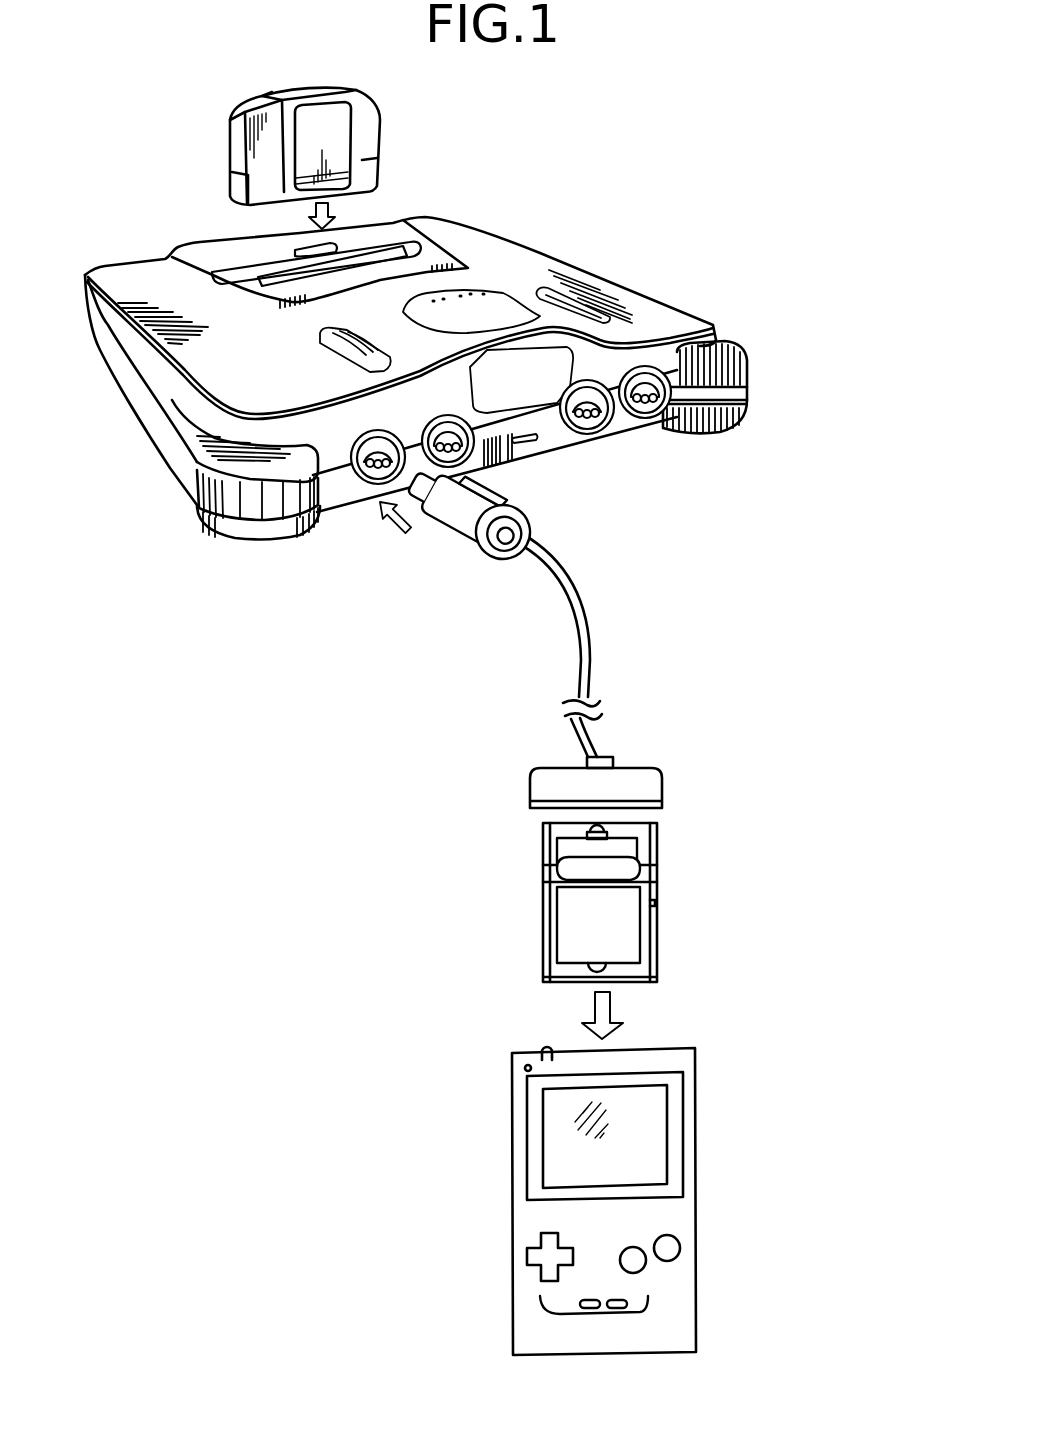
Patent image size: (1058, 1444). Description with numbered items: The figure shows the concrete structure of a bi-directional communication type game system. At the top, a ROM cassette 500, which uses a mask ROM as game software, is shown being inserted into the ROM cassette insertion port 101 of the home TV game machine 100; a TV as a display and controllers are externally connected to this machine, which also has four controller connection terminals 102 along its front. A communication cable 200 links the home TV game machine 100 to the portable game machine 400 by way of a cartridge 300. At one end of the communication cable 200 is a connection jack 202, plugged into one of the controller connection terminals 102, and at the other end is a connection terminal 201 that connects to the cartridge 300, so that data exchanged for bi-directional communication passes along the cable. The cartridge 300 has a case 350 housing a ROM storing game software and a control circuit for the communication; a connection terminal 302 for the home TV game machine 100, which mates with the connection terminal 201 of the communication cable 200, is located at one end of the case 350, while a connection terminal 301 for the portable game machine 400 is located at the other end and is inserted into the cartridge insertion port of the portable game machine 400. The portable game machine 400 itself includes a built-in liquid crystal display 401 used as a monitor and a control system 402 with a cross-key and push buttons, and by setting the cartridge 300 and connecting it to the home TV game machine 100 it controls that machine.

The home TV game machine 100 is at (465, 372).
The ROM cassette insertion port 101 is at (392, 247).
The controller connection terminal 102 is at (355, 476).
The communication cable 200 is at (615, 632).
The connection terminal 201 is at (663, 780).
The connection jack 202 is at (460, 540).
The cartridge 300 is at (664, 930).
The connection terminal for a portable game machine 301 is at (643, 970).
The connection terminal for a home TV game machine 302 is at (642, 832).
The case 350 is at (543, 897).
The portable game machine 400 is at (678, 1194).
The liquid crystal display 401 is at (558, 1127).
The control system 402 is at (597, 1316).
The ROM cassette 500 is at (372, 102).